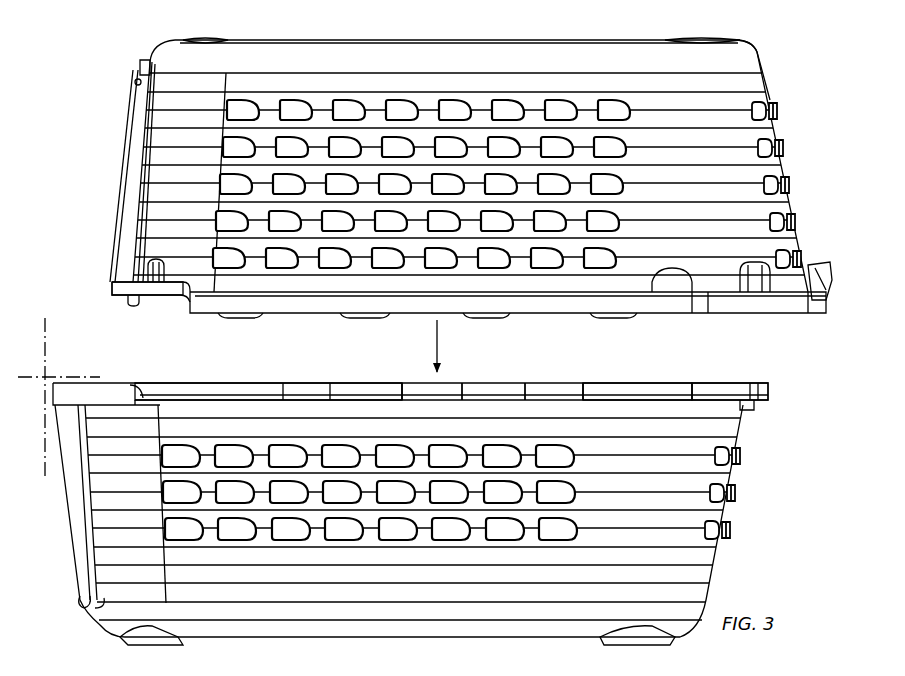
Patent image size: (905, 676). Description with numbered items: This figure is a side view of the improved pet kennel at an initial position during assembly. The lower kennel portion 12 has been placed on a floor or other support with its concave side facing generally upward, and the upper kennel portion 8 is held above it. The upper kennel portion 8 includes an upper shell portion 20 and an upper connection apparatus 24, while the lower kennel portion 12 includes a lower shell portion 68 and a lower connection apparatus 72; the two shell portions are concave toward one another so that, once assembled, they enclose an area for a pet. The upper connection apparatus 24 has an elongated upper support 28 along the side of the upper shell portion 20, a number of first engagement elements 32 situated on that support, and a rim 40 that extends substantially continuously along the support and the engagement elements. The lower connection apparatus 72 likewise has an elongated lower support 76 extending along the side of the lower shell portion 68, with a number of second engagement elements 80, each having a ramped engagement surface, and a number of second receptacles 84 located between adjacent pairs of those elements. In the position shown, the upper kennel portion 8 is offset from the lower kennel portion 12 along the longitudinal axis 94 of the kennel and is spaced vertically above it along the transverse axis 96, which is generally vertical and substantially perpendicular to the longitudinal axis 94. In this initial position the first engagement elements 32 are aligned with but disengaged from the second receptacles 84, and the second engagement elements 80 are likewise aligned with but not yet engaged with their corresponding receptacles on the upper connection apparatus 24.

The upper kennel portion 8 is at (569, 36).
The lower kennel portion 12 is at (150, 382).
The upper shell portion 20 is at (755, 53).
The upper connection apparatus 24 is at (181, 311).
The upper support 28 is at (694, 313).
The first engagement element 32 is at (244, 322).
The rim 40 is at (746, 300).
The lower shell portion 68 is at (714, 558).
The lower connection apparatus 72 is at (735, 382).
The lower support 76 is at (648, 385).
The second engagement element 80 is at (287, 383).
The second receptacle 84 is at (377, 388).
The longitudinal axis 94 is at (58, 372).
The transverse axis 96 is at (48, 330).